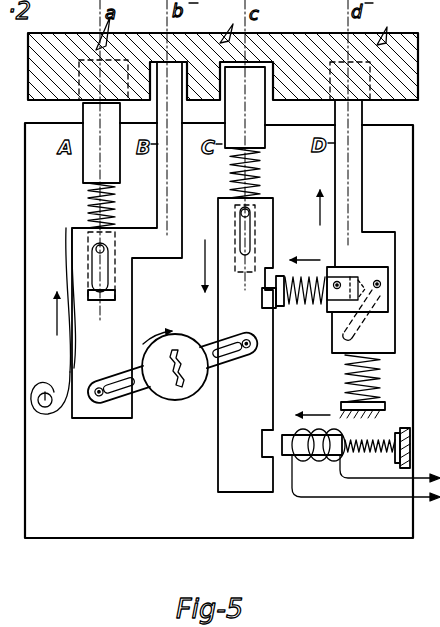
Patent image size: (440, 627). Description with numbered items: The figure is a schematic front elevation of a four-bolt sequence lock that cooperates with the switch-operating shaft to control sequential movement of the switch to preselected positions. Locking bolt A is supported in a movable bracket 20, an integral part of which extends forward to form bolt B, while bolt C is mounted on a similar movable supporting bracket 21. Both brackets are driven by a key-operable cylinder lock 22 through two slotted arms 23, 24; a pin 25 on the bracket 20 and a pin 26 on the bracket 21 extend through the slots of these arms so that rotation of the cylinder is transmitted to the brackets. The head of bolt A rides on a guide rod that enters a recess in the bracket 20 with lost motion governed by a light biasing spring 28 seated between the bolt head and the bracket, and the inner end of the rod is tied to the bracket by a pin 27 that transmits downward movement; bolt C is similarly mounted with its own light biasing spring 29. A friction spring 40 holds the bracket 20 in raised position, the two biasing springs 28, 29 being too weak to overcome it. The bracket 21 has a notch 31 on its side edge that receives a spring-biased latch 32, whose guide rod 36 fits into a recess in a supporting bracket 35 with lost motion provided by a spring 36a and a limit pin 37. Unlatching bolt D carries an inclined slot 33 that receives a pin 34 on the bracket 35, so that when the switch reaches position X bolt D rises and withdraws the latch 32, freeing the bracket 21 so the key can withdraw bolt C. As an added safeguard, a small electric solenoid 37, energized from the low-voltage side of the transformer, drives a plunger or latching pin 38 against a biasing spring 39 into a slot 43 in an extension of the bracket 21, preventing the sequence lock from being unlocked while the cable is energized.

The movable bracket 20 is at (78, 230).
The movable supporting bracket 21 is at (222, 207).
The key-operable cylinder lock 22 is at (180, 400).
The slotted arm 23 is at (112, 378).
The slotted arm 24 is at (245, 337).
The pin 25 is at (103, 394).
The pin 26 is at (244, 347).
The pin 27 is at (104, 252).
The biasing spring 28 is at (117, 205).
The biasing spring 29 is at (254, 194).
The notch 31 is at (268, 289).
The spring-biased latch 32 is at (281, 273).
The inclined slot 33 is at (352, 331).
The pin 34 is at (376, 281).
The supporting bracket 35 is at (330, 327).
The guide rod 36 is at (332, 271).
The spring 36a is at (312, 306).
The limit pin / electric solenoid 37 is at (339, 283).
The plunger or latching pin 38 is at (287, 458).
The biasing spring 39 is at (353, 453).
The friction spring 40 is at (69, 376).
The slot 43 is at (271, 439).